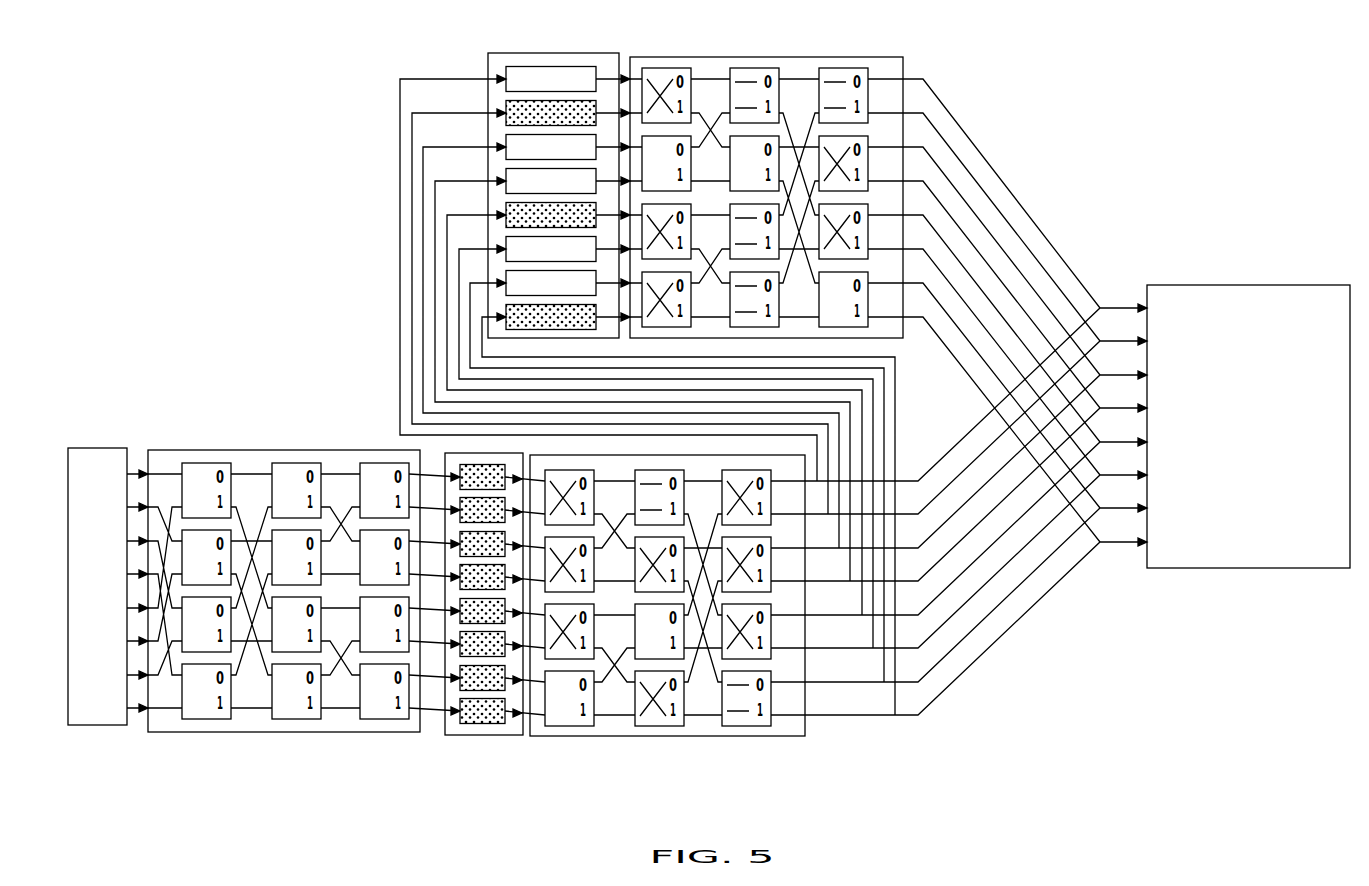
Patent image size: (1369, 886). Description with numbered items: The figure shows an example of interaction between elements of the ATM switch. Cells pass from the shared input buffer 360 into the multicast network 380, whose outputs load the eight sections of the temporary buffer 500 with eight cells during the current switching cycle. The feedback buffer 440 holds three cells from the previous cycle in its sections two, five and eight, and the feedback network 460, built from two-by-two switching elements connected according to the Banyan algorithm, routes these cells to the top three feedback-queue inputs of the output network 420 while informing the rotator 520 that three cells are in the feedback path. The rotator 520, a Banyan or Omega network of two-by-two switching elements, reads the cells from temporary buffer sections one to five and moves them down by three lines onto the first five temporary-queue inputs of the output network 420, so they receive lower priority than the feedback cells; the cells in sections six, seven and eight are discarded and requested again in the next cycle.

The input buffer 360 is at (98, 448).
The multicast network 380 is at (258, 450).
The output network 420 is at (1255, 285).
The feedback buffer 440 is at (604, 54).
The feedback network 460 is at (876, 57).
The temporary buffer 500 is at (428, 736).
The rotator 520 is at (752, 737).